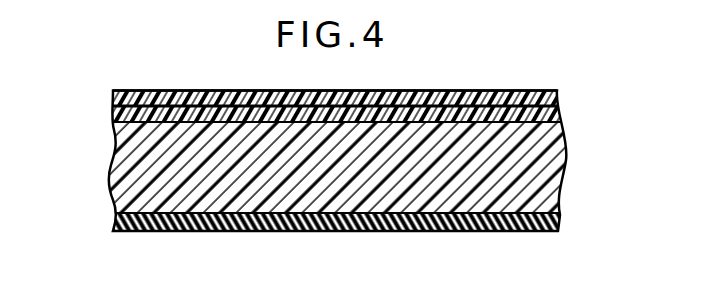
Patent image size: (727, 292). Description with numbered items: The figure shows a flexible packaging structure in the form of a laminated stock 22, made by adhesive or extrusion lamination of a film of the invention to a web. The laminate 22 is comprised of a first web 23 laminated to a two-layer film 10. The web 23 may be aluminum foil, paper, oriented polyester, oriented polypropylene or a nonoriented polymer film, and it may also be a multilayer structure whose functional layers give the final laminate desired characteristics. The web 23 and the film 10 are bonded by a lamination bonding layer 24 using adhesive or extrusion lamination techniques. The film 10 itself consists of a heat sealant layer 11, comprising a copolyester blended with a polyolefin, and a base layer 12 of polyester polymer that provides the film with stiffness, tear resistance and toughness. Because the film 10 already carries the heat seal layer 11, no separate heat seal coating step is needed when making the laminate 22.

The two-layer film 10 is at (102, 124).
The heat sealant layer 11 is at (332, 230).
The base layer 12 is at (550, 173).
The laminated stock 22 is at (209, 80).
The first web 23 is at (470, 97).
The lamination bonding layer 24 is at (547, 113).